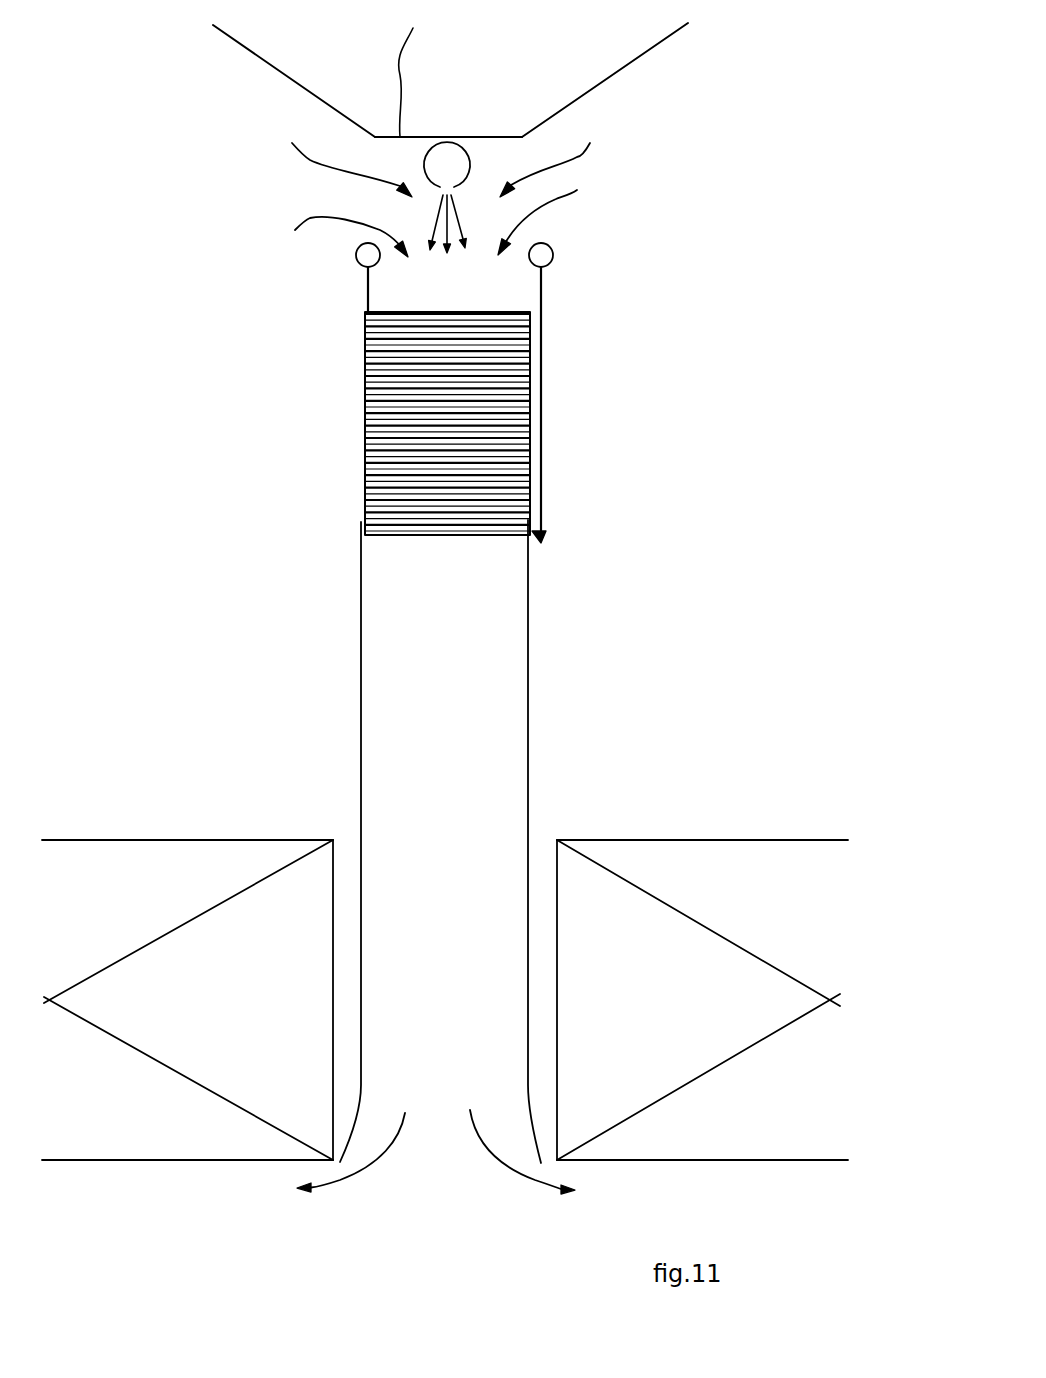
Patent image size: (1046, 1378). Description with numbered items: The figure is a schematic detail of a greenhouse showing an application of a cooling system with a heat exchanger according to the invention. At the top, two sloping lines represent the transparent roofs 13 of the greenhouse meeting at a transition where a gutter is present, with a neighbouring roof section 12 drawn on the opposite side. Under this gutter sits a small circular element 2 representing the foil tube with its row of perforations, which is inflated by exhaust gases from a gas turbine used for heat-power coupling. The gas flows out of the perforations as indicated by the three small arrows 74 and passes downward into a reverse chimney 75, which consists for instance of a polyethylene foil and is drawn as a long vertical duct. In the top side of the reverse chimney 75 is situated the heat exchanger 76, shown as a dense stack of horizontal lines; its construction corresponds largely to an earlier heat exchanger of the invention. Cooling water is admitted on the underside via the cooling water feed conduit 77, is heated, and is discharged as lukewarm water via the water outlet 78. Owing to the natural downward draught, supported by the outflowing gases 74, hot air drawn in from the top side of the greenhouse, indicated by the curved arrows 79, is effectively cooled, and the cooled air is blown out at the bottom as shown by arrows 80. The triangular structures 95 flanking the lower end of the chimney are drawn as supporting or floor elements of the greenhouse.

The sample 2 is at (452, 152).
The funnel wall 12 is at (630, 62).
The transparent roofs 13 is at (265, 60).
The arrows 74 is at (457, 209).
The reverse chimney 75 is at (360, 597).
The heat exchanger 76 is at (385, 406).
The cooling water feed conduit 77 is at (555, 254).
The water outlet 78 is at (355, 257).
The arrows 79 is at (310, 160).
The arrows 80 is at (487, 1157).
The support plate 95 is at (198, 858).